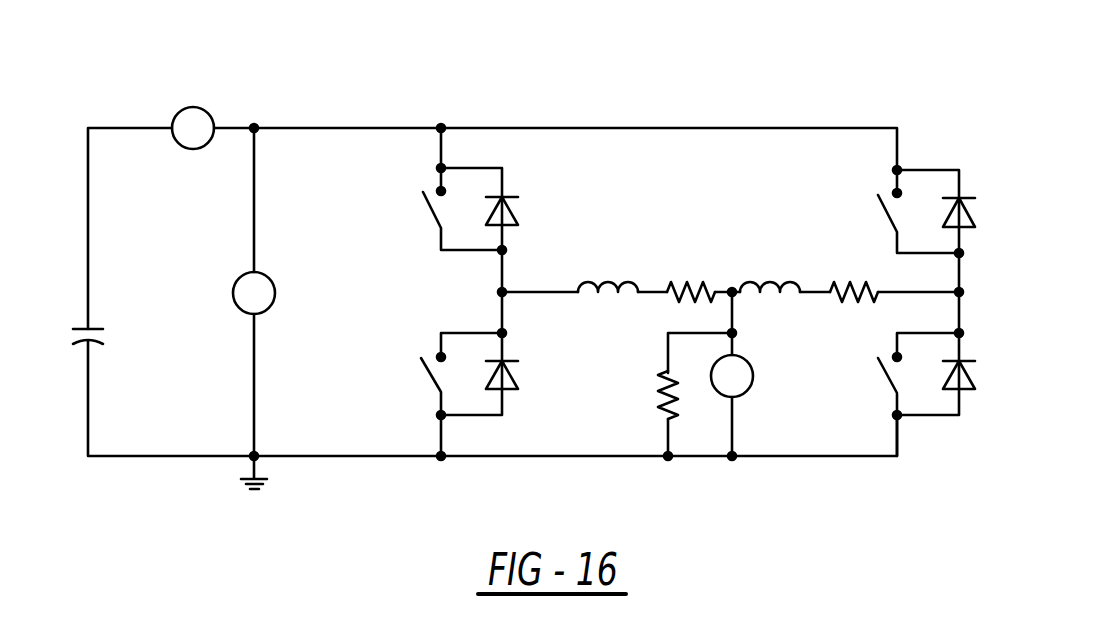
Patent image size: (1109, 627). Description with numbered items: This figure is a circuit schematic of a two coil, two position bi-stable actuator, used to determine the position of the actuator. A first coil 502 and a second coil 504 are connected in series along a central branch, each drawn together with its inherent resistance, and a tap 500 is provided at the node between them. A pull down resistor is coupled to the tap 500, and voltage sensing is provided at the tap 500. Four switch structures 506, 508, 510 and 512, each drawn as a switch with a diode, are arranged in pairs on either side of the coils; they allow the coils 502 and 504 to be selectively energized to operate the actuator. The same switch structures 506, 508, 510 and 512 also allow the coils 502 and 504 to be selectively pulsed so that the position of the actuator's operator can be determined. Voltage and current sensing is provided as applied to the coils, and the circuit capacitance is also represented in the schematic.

The tap 500 is at (733, 277).
The first coil 502 is at (578, 272).
The second coil 504 is at (742, 316).
The switch structure 506 is at (518, 177).
The switch structure 508 is at (415, 382).
The switch structure 510 is at (934, 437).
The switch structure 512 is at (926, 158).